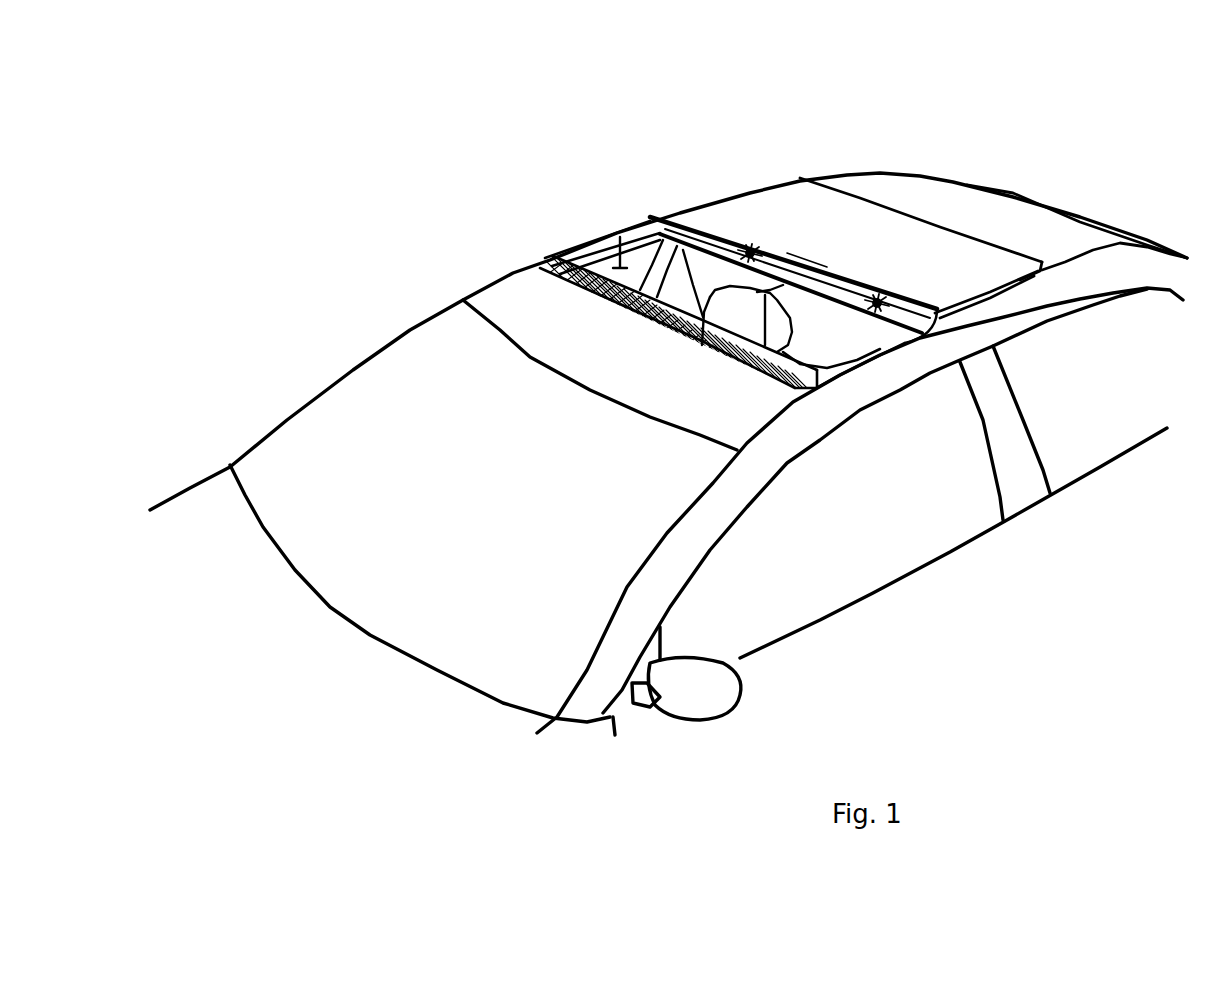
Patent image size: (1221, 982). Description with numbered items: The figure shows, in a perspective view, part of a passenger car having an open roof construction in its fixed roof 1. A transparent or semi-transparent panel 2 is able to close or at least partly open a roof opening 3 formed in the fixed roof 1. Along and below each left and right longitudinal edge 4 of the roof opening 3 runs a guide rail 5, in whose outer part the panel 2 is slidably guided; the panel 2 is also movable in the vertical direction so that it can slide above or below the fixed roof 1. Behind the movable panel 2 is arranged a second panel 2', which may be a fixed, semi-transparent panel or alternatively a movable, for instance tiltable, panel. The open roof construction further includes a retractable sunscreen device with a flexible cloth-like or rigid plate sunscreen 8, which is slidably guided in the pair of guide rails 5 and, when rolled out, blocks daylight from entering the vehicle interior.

The fixed roof 1 is at (523, 272).
The panel 2 is at (883, 207).
The second panel 2' is at (1077, 196).
The roof opening 3 is at (617, 240).
The longitudinal edge 4 is at (595, 242).
The guide rail 5 is at (648, 232).
The sunscreen 8 is at (680, 222).